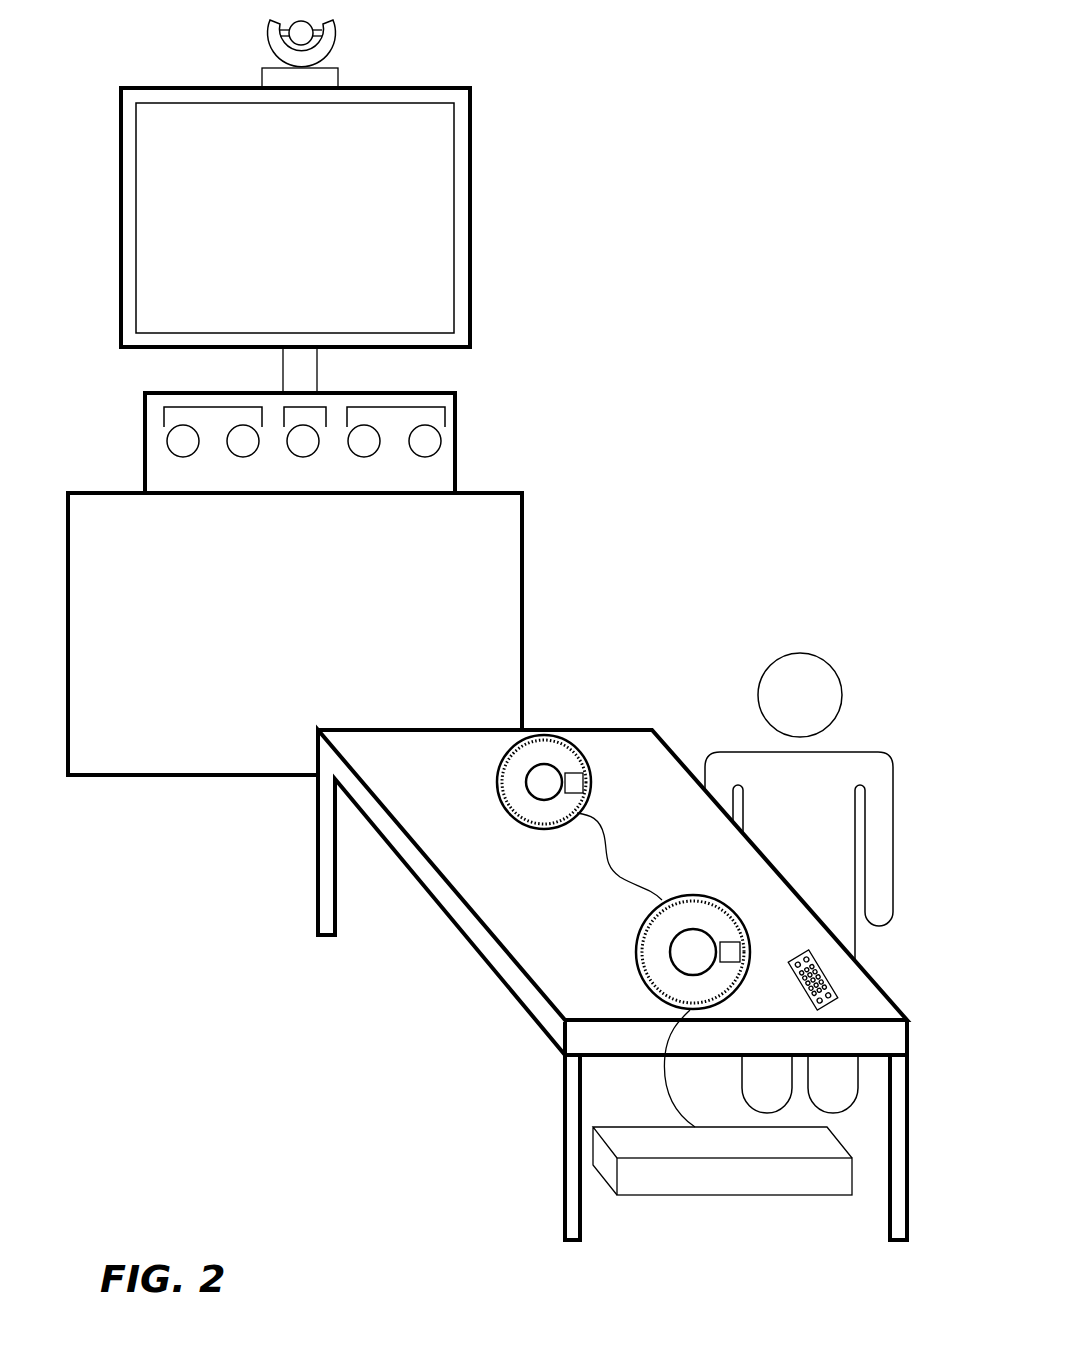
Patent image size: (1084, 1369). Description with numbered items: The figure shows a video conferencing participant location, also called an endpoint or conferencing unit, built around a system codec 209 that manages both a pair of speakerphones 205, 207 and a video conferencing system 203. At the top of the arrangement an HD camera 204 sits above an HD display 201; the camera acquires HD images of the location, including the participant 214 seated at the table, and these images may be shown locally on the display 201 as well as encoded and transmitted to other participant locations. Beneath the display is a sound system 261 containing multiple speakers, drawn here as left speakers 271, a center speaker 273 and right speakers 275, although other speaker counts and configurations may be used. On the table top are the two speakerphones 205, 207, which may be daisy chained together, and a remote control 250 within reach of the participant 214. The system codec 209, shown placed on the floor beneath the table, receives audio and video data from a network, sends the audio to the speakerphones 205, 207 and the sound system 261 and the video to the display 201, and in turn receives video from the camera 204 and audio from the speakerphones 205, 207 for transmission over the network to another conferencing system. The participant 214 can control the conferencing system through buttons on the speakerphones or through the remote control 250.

The HD display 201 is at (385, 198).
The video conferencing system 203 is at (766, 262).
The HD camera 204 is at (333, 40).
The speakerphone 205 is at (637, 950).
The speakerphone 207 is at (543, 750).
The system codec 209 is at (707, 1180).
The participant 214 is at (808, 690).
The remote control 250 is at (826, 973).
The sound system 261 is at (450, 435).
The left speakers 271 is at (197, 407).
The center speaker 273 is at (310, 407).
The right speakers 275 is at (425, 407).